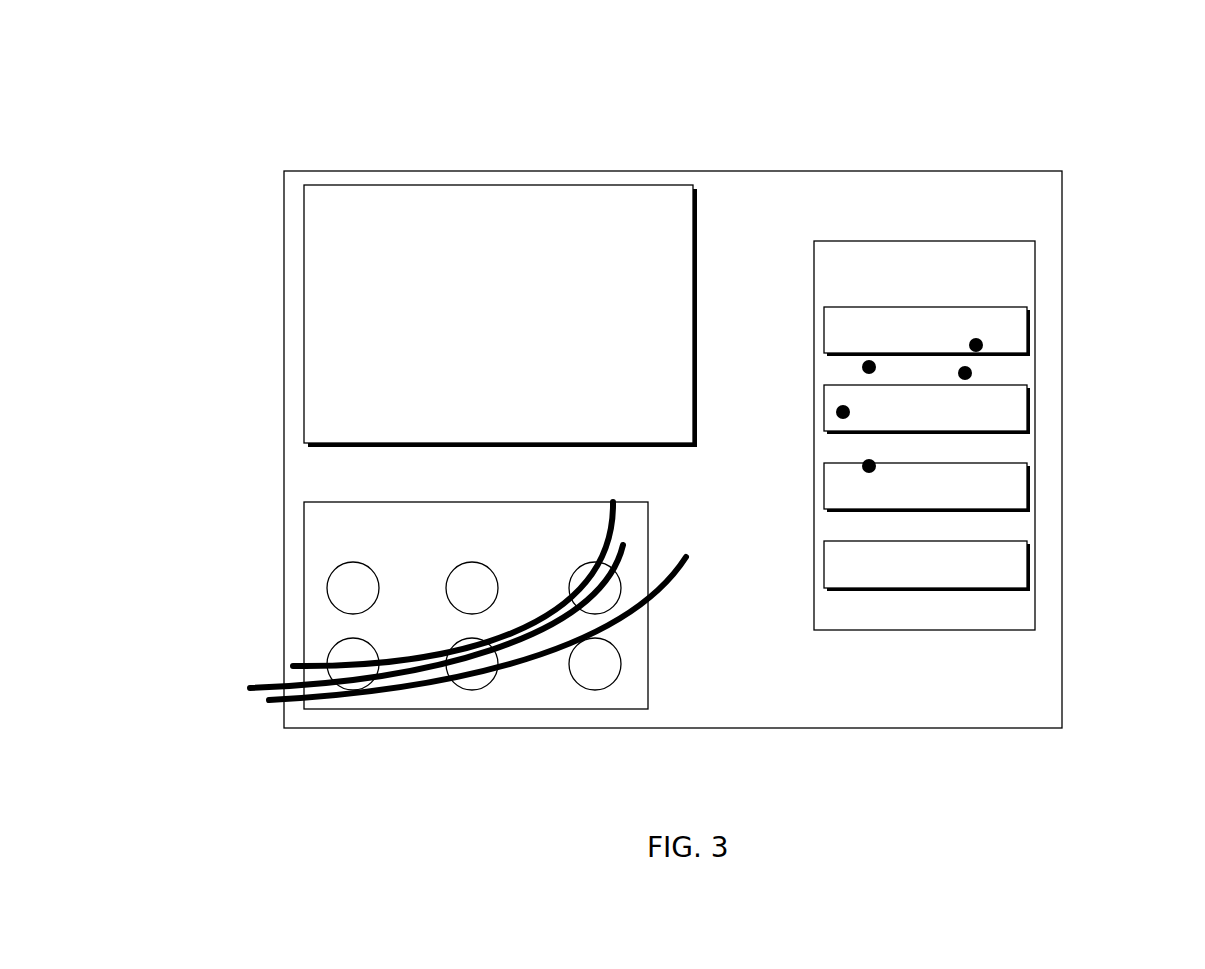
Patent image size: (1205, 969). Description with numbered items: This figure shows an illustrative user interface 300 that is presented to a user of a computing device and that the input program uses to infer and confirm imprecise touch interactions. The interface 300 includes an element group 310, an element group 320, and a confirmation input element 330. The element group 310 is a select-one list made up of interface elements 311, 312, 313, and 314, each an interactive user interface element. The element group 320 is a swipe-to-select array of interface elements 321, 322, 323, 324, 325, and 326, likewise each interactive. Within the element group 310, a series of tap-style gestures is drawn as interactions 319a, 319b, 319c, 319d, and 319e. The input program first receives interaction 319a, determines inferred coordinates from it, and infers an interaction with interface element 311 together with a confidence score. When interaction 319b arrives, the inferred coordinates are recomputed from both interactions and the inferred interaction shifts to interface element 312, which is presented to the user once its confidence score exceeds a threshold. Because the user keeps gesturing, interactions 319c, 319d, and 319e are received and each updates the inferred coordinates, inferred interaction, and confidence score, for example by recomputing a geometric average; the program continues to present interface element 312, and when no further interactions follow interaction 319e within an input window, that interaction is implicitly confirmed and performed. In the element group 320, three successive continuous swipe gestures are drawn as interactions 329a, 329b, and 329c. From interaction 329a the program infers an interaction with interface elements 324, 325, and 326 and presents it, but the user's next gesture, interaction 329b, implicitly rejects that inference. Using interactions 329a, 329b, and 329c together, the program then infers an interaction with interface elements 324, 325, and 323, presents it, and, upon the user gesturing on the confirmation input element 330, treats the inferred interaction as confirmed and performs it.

The user interface 300 is at (1078, 123).
The element group 310 is at (1035, 272).
The interface element 311 is at (1030, 328).
The interface element 312 is at (1030, 408).
The interface element 313 is at (1030, 485).
The interface element 314 is at (1030, 565).
The interaction 319a is at (862, 367).
The interaction 319b is at (862, 466).
The interaction 319c is at (983, 345).
The interaction 319d is at (836, 412).
The interaction 319e is at (972, 373).
The element group 320 is at (304, 545).
The interface element 321 is at (327, 578).
The interface element 322 is at (446, 588).
The interface element 323 is at (621, 590).
The interface element 324 is at (365, 690).
The interface element 325 is at (485, 690).
The interface element 326 is at (598, 690).
The interaction 329a is at (293, 667).
The interaction 329b is at (269, 700).
The interaction 329c is at (250, 688).
The confirmation input element 330 is at (304, 313).